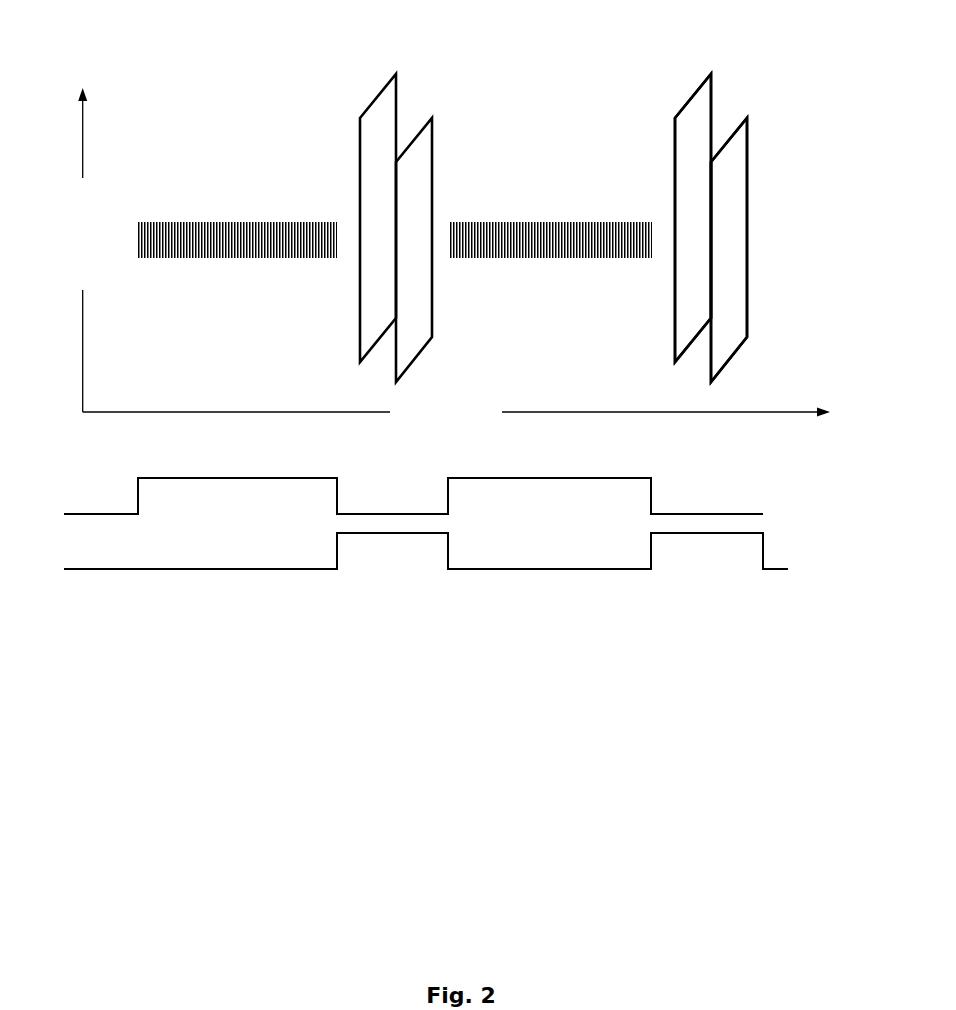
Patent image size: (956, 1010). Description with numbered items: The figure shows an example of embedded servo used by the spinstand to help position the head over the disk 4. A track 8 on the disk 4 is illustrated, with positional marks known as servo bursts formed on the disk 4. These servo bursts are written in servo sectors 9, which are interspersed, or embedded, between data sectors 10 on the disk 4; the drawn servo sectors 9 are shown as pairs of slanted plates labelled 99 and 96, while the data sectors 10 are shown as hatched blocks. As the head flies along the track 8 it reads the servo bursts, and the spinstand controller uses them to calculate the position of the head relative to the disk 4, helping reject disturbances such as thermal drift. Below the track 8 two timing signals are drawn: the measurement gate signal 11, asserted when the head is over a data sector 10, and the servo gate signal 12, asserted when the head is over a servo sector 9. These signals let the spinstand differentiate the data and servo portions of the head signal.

The disk 4 is at (829, 32).
The track 8 is at (786, 201).
The servo sector 9 is at (601, 235).
The data sector 10 is at (214, 283).
The measurement gate signal 11 is at (397, 496).
The servo gate signal 12 is at (410, 557).
The second shield / reader element 96 is at (578, 237).
The first shield / reader element 99 is at (524, 218).